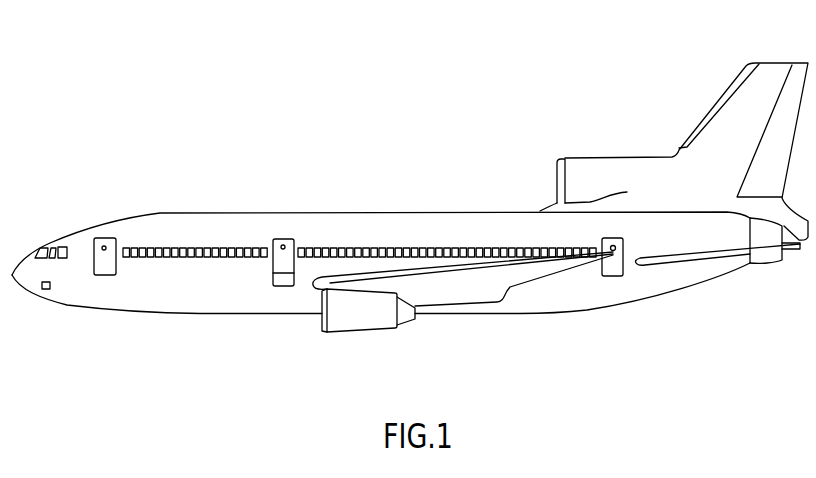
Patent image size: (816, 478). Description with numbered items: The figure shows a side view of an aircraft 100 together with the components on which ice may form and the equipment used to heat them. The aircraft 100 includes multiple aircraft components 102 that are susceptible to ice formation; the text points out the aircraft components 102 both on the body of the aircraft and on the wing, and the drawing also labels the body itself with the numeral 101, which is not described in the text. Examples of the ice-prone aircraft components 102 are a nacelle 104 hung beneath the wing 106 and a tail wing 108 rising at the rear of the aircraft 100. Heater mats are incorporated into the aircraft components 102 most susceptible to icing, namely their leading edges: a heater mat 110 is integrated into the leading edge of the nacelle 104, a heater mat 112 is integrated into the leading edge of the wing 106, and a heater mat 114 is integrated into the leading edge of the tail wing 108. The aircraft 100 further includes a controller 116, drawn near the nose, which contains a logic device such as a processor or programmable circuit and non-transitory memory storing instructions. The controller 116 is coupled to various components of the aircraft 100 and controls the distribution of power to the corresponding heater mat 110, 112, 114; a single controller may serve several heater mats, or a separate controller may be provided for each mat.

The aircraft 100 is at (173, 150).
The fuselage 101 is at (157, 302).
The aircraft components 102 is at (202, 231).
The nacelle 104 is at (347, 333).
The wing 106 is at (434, 302).
The tail wing 108 is at (762, 63).
The heater mat 110 is at (323, 330).
The heater mat 112 is at (390, 276).
The heater mat 114 is at (727, 91).
The controller 116 is at (46, 290).